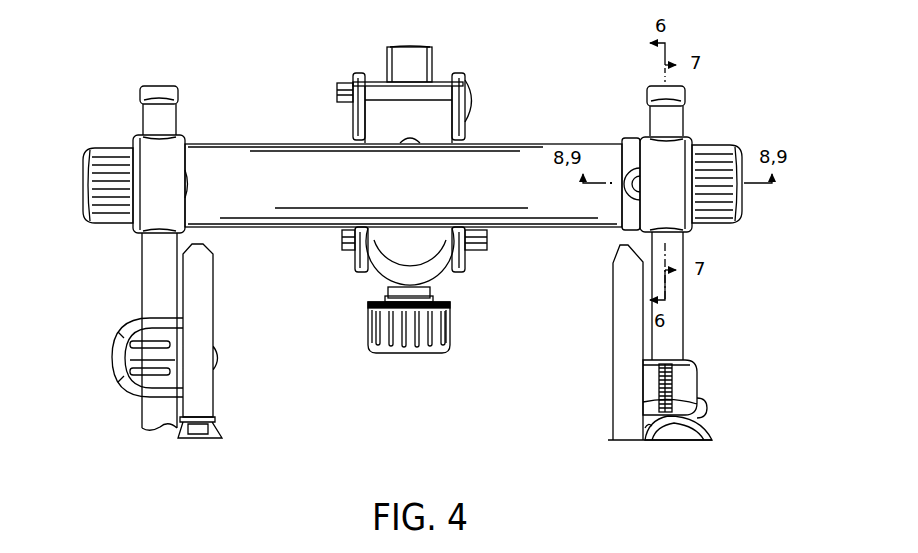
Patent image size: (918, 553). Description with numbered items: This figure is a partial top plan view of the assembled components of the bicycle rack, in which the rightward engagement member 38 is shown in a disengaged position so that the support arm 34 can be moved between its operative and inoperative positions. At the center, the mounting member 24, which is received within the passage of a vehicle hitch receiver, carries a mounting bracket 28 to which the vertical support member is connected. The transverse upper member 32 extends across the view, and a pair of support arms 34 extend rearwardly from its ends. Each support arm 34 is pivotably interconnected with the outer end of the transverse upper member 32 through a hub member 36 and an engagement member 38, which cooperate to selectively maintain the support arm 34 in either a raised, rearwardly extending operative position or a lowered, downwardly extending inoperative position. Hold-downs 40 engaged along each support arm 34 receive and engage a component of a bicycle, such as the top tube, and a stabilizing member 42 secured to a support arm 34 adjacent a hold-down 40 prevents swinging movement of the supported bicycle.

The mounting member 24 is at (437, 62).
The mounting bracket 28 is at (479, 111).
The transverse upper member 32 is at (292, 140).
The support arm 34 is at (138, 262).
The hub member 36 is at (130, 135).
The engagement member 38 is at (79, 187).
The hold-down 40 is at (101, 355).
The stabilizing member 42 is at (709, 382).